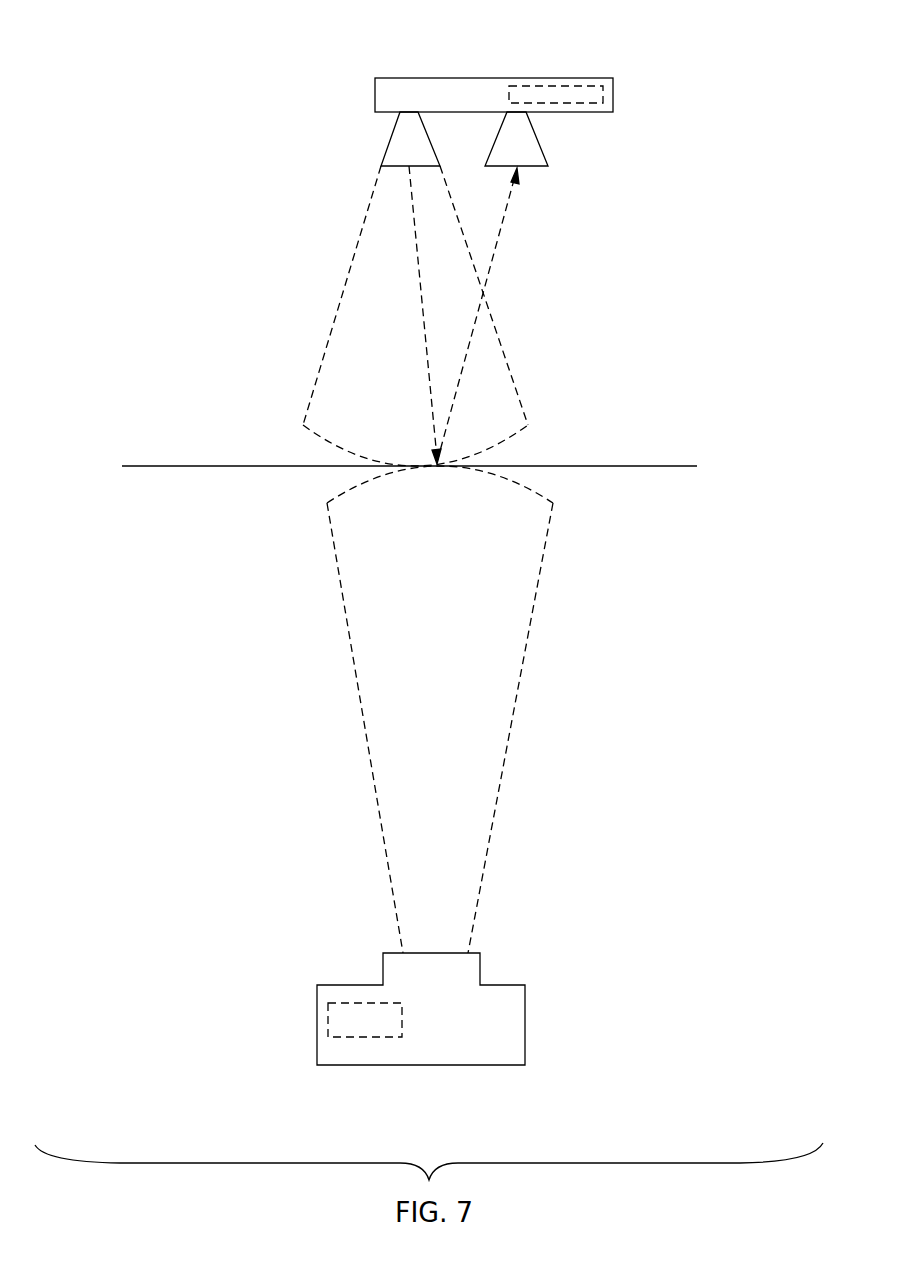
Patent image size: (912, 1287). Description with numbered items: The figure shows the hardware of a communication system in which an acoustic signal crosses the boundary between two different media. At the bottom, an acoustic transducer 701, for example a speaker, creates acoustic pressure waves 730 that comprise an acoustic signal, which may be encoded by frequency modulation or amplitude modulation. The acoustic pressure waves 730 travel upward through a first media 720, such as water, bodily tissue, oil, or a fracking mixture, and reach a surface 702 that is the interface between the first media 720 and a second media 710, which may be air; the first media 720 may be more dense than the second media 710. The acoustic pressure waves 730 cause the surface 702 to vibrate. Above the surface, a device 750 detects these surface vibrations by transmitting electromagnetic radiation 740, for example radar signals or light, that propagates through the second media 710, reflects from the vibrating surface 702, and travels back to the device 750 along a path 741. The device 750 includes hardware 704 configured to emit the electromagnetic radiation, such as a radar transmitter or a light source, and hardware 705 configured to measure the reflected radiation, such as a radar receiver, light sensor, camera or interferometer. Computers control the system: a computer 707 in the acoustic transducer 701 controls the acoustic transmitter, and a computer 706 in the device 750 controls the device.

The device 750 is at (342, 72).
The computer 706 is at (570, 88).
The hardware configured to emit EM radiation 704 is at (383, 149).
The hardware configured to measure reflected EM radiation 705 is at (549, 151).
The electromagnetic radiation 740 is at (333, 318).
The path 741 is at (498, 238).
The second media 710 is at (643, 312).
The first media 720 is at (643, 808).
The surface 702 is at (657, 466).
The acoustic pressure waves 730 is at (525, 657).
The acoustic transducer 701 is at (526, 1028).
The computer 707 is at (326, 1004).